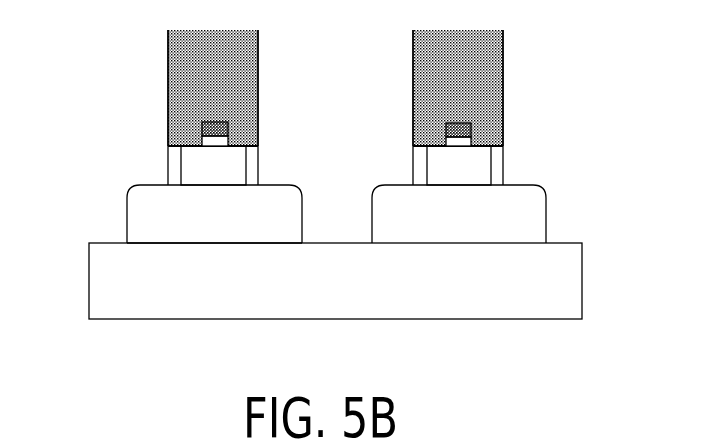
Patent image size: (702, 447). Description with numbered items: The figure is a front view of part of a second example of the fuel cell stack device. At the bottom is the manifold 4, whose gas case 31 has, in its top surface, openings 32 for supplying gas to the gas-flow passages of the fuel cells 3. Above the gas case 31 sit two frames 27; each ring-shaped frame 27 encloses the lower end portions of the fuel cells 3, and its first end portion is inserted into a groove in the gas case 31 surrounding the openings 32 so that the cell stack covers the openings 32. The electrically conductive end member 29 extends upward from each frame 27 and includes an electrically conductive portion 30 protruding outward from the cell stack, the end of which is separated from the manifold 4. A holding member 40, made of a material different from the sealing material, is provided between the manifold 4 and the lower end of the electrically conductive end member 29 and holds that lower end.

The manifold 4 is at (328, 203).
The gas case 31 is at (378, 277).
The frame 27 is at (303, 217).
The openings 32 is at (165, 243).
The electrically conductive end member 29 is at (178, 92).
The fuel cells 3 is at (255, 175).
The holding member 40 is at (203, 167).
The electrically conductive portion 30 is at (215, 127).